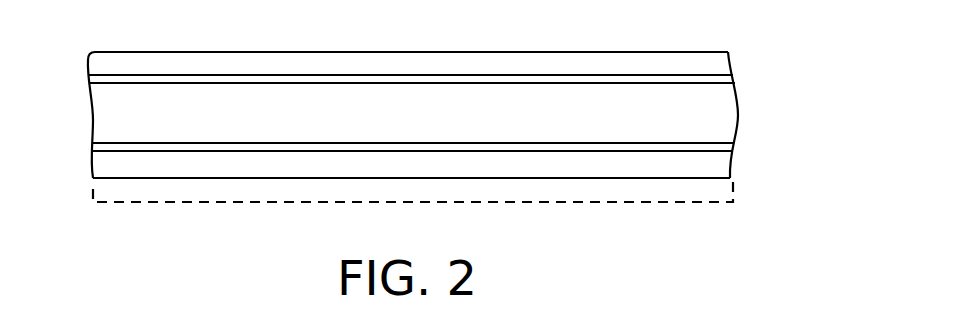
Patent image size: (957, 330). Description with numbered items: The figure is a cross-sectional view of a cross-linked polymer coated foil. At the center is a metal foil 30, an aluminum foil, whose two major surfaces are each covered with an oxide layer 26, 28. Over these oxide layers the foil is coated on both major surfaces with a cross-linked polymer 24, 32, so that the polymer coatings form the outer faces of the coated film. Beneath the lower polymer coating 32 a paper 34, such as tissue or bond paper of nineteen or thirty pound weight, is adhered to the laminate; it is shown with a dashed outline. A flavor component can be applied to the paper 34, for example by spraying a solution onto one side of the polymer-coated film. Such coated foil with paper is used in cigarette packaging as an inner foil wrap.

The cross-linked polymer coating 24 is at (723, 63).
The oxide layer 26 is at (96, 79).
The oxide layer 28 is at (97, 150).
The metal foil 30 is at (413, 115).
The cross-linked polymer coating 32 is at (718, 165).
The paper 34 is at (97, 191).